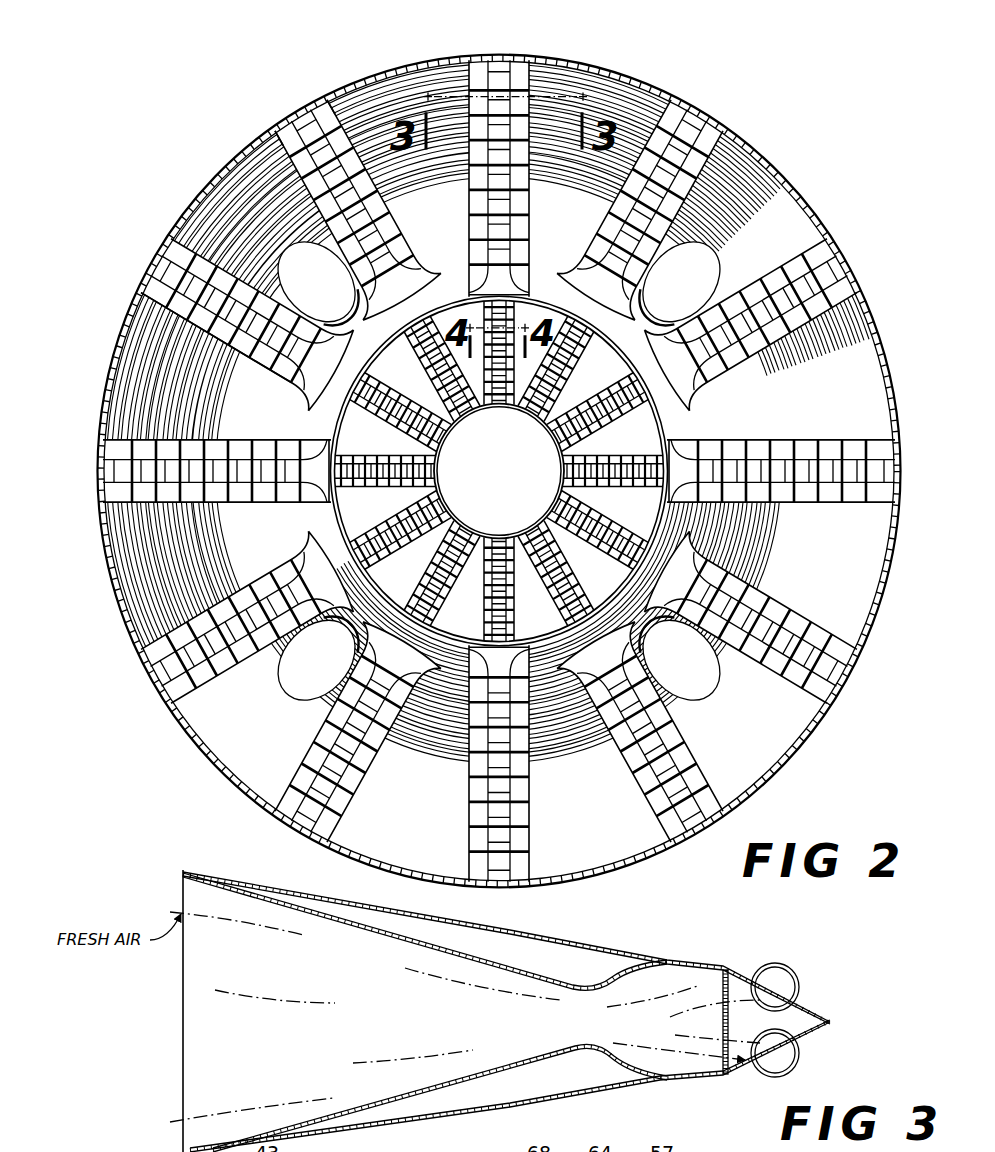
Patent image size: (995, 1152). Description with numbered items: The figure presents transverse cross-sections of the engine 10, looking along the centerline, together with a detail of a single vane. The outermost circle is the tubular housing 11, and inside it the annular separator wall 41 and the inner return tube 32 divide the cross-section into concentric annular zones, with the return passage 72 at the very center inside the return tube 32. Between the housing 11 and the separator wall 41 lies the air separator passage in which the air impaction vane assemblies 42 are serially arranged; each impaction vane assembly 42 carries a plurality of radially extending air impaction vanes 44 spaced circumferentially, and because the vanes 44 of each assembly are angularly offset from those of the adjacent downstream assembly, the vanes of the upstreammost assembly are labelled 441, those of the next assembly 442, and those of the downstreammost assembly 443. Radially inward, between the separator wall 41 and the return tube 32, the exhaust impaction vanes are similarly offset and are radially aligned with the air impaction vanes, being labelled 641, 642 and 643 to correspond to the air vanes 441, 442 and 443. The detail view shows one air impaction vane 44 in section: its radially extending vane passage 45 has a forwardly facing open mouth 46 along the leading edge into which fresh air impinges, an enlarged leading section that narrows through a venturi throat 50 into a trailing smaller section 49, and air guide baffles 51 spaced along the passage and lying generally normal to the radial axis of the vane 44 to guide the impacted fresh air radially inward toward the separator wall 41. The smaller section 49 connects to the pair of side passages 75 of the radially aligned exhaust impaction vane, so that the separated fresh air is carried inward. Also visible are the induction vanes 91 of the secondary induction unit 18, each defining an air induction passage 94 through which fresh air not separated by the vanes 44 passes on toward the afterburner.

In FIG. 2, the engine 10 is at (499, 471).
In FIG. 2, the tubular housing 11 is at (499, 471).
In FIG. 2, the secondary induction unit 18 is at (518, 617).
In FIG. 2, the inner return tube 32 is at (499, 472).
In FIG. 2, the annular separator wall 41 is at (499, 470).
In FIG. 2, the air impaction vane assembly 42 is at (298, 294).
In FIG. 3, the air impaction vane 44 is at (622, 943).
In FIG. 2, the impaction vanes of the upstreammost assembly 441 is at (499, 470).
In FIG. 2, the impaction vanes of the next upstreammost assembly 442 is at (499, 471).
In FIG. 2, the impaction vanes of the downstreammost assembly 443 is at (499, 471).
In FIG. 2, the vane passage 45 is at (401, 87).
In FIG. 3, the vane passage 45 is at (193, 1027).
In FIG. 3, the open mouth 46 is at (182, 983).
In FIG. 3, the trailing smaller section 49 is at (803, 1020).
In FIG. 3, the venturi throat 50 is at (590, 1005).
In FIG. 3, the air guide baffle 51 is at (410, 1019).
In FIG. 2, the exhaust impaction vanes of the first assembly 641 is at (499, 471).
In FIG. 2, the exhaust impaction vanes of the second assembly 642 is at (500, 471).
In FIG. 2, the exhaust impaction vanes of the third assembly 643 is at (498, 471).
In FIG. 2, the return passage 72 is at (499, 471).
In FIG. 3, the side passage 75 is at (778, 998).
In FIG. 2, the induction vane 91 is at (500, 468).
In FIG. 2, the air induction passage 94 is at (505, 480).